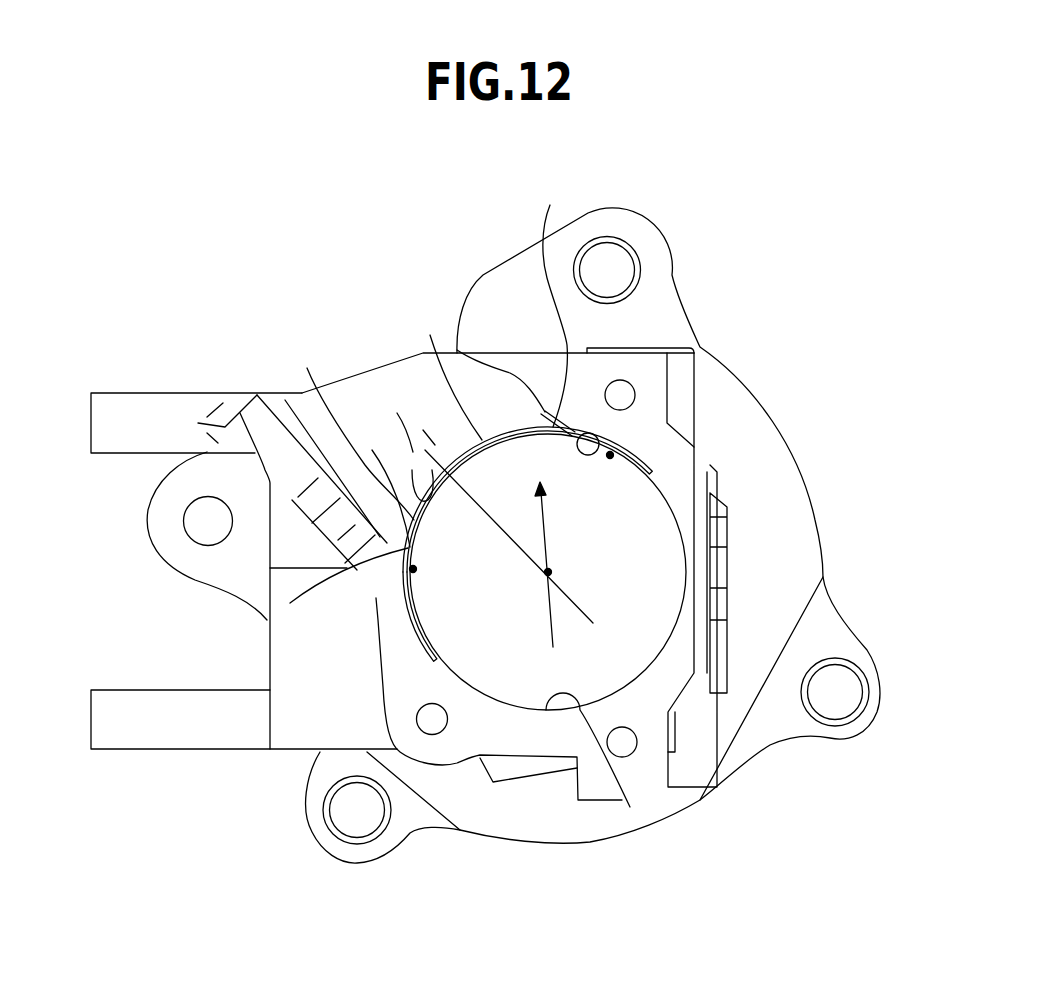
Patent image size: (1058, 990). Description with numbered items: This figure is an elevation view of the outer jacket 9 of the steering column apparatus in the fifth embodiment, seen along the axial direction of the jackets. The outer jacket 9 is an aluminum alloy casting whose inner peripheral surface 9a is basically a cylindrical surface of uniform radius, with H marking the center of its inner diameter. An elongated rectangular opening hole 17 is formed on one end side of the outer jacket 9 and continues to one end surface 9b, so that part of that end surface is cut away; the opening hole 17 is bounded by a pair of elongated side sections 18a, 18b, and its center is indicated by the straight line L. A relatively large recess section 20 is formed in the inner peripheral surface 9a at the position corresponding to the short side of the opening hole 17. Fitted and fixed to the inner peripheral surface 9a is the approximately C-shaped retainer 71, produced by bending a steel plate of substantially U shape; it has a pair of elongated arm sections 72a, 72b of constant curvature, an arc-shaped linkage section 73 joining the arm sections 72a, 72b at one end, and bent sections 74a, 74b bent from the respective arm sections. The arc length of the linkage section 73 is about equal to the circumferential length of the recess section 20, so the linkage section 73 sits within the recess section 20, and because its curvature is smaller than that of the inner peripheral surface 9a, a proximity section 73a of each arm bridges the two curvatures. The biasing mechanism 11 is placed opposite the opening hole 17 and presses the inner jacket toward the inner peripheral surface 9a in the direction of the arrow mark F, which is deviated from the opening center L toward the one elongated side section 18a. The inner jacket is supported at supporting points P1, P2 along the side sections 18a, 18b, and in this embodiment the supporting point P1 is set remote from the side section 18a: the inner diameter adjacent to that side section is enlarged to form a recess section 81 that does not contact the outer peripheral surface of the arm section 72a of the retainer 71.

The outer jacket 9 is at (766, 308).
The inner peripheral surface 9a is at (630, 807).
The one end surface 9b is at (472, 740).
The biasing mechanism 11 is at (523, 795).
The opening hole 17 is at (397, 413).
The one elongated side section 18a is at (457, 350).
The other elongated side section 18b is at (285, 400).
The recess section 20 is at (372, 450).
The retainer 71 is at (630, 462).
The one arm section 72a is at (652, 478).
The other arm section 72b is at (435, 652).
The linkage section 73 is at (443, 377).
The proximity section 73a is at (548, 418).
The bent section 74a is at (567, 318).
The bent section 74b is at (290, 603).
The recess section 81 is at (603, 442).
The opening center L is at (432, 443).
The biasing direction F is at (547, 541).
The center of inner diameter H is at (546, 573).
The supporting point P1 is at (609, 457).
The supporting point P2 is at (415, 569).